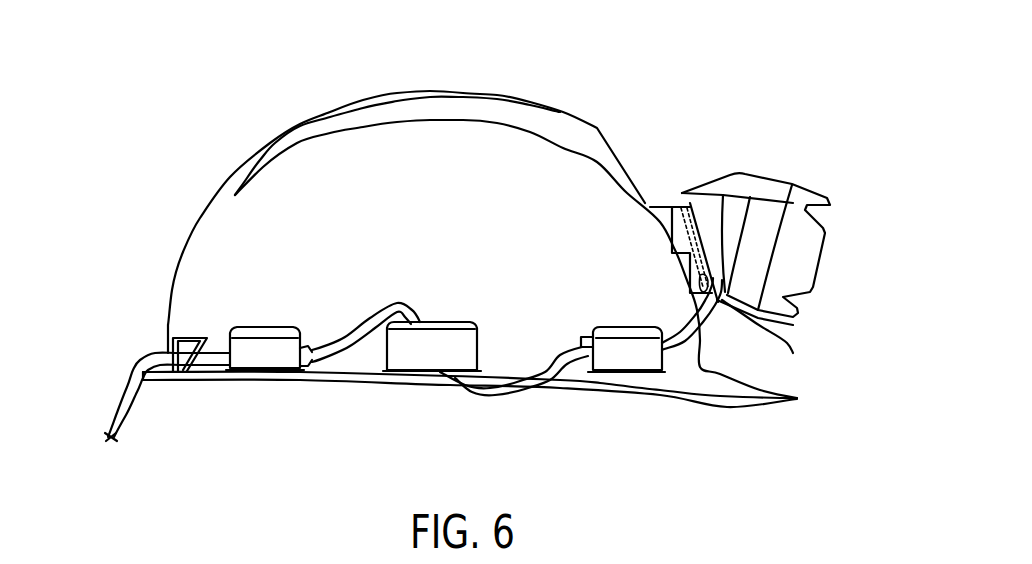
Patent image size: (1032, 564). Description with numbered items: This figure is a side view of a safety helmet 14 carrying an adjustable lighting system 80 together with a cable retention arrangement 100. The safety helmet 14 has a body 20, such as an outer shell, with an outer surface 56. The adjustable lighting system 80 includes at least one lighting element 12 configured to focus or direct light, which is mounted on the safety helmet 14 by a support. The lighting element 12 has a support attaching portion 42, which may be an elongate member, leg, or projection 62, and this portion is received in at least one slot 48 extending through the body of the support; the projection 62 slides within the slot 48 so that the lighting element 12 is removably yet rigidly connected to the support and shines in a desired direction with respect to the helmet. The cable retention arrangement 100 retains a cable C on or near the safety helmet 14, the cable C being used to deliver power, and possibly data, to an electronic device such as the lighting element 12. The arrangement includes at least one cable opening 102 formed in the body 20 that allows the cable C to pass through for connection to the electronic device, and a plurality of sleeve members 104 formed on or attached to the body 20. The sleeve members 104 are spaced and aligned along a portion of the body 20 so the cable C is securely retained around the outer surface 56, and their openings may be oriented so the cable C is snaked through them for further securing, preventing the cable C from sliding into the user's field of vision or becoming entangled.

The safety helmet 14 is at (186, 118).
The body 20 is at (212, 204).
The outer surface 56 is at (188, 290).
The cable C is at (119, 414).
The cable opening 102 is at (182, 373).
The cable retention arrangement 100 is at (243, 399).
The sleeve member 104 is at (275, 352).
The adjustable lighting system 80 is at (763, 124).
The projection 62 is at (693, 220).
The support attaching portion 42 is at (704, 206).
The lighting element 12 is at (780, 172).
The slot 48 is at (774, 345).